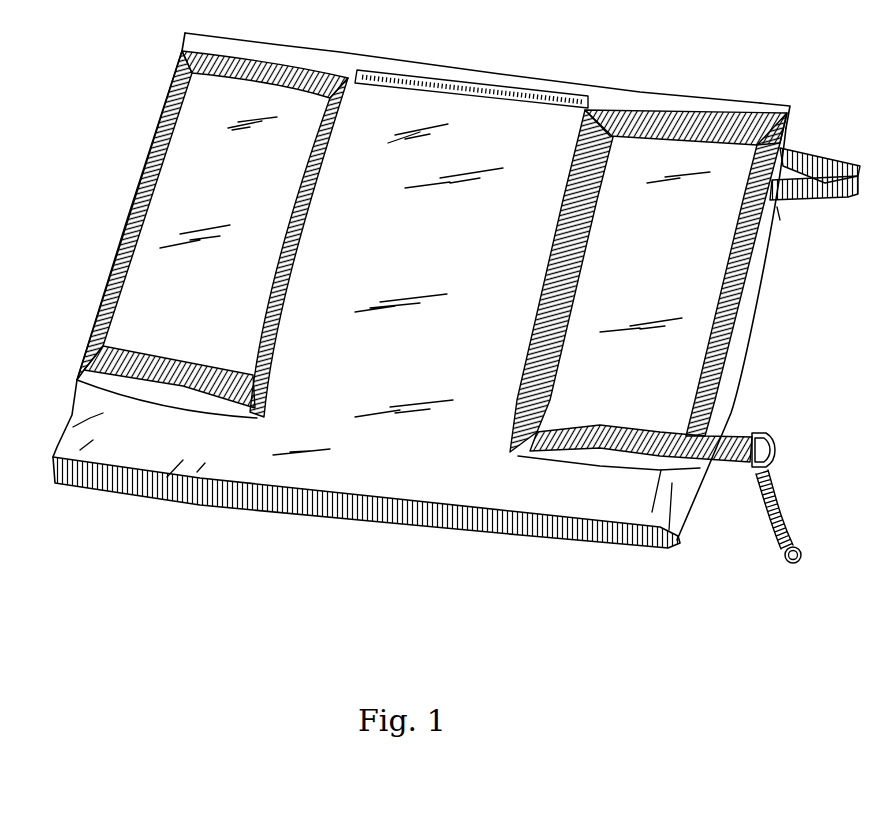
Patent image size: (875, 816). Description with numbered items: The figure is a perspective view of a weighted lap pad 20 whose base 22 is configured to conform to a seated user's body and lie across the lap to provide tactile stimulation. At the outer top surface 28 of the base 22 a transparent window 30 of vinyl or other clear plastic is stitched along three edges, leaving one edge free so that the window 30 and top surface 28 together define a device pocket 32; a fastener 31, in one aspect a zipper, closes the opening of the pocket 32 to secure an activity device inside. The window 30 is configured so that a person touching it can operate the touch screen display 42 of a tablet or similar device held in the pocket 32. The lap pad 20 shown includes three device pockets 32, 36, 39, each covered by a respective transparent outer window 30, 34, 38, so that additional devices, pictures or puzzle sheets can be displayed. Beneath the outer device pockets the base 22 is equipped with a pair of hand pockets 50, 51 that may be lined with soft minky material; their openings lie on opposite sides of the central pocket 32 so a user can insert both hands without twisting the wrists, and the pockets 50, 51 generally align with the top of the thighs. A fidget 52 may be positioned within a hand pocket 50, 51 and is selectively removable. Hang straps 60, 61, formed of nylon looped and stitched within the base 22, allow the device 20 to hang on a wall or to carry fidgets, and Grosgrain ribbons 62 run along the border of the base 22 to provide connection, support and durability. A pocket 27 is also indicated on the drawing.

The weighted lap pad 20 is at (737, 71).
The base 22 is at (771, 108).
The first pocket 27 is at (119, 180).
The top surface 28 is at (603, 100).
The transparent window 30 is at (515, 160).
The fastener 31 is at (386, 80).
The device pocket 32 is at (389, 214).
The transparent outer window 34 is at (253, 173).
The device pocket 36 is at (179, 284).
The transparent outer window 38 is at (685, 237).
The device pocket 39 is at (619, 358).
The touch screen display 42 is at (577, 285).
The hand pocket 50 is at (167, 392).
The hand pocket 51 is at (609, 459).
The fidget 52 is at (777, 508).
The hang strap 60 is at (815, 195).
The hang strap 61 is at (740, 430).
The Grosgrain ribbon 62 is at (110, 278).